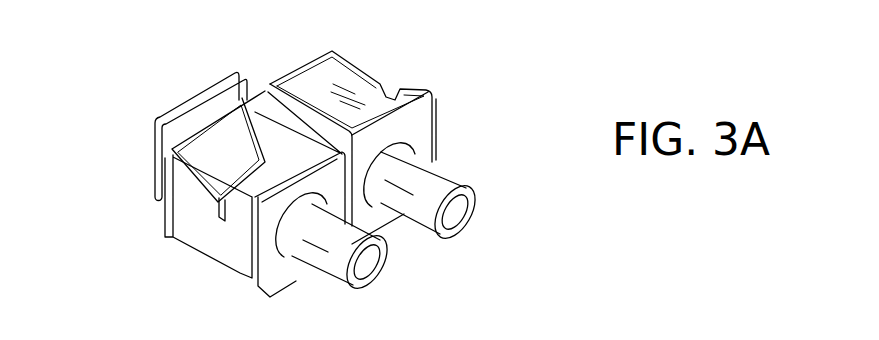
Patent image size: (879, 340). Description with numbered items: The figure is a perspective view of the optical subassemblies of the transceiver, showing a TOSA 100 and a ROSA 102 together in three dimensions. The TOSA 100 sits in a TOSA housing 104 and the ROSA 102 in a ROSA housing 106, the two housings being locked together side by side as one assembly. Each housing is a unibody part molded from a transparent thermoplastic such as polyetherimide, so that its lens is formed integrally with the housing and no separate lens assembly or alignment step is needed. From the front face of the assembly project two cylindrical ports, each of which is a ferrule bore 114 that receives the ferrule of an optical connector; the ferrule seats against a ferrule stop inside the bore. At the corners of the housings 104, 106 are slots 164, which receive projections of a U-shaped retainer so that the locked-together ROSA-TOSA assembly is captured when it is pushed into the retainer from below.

The TOSA 100 is at (163, 153).
The ROSA 102 is at (337, 56).
The TOSA housing 104 is at (158, 214).
The ROSA housing 106 is at (452, 118).
The ferrule bore 114 is at (463, 216).
The slots 164 is at (264, 170).